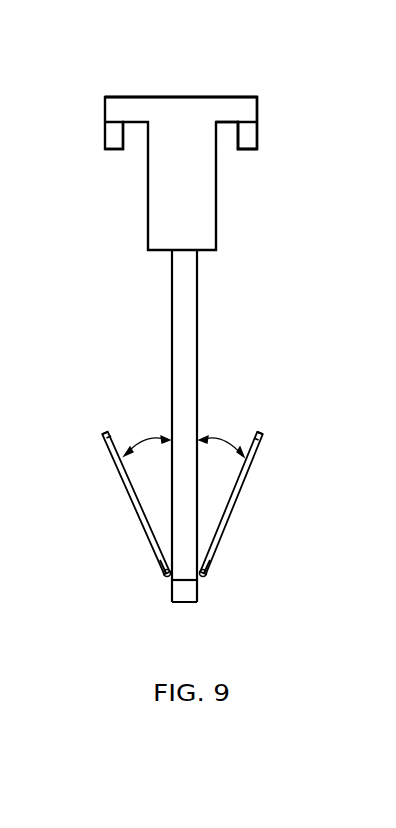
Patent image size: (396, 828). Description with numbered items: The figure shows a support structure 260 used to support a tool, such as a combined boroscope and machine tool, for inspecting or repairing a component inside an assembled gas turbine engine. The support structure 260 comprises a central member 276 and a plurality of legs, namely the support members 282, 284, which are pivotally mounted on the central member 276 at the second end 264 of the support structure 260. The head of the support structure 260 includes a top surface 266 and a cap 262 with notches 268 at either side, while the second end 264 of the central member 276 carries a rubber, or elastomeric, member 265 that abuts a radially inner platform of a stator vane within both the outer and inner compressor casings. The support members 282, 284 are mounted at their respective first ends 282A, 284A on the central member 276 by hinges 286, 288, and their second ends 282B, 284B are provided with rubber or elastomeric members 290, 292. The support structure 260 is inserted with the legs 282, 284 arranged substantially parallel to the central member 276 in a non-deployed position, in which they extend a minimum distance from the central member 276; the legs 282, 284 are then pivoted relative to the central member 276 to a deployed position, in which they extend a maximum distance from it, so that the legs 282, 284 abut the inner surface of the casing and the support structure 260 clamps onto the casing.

The support structure 260 is at (233, 228).
The head 262 is at (238, 96).
The second end 264 is at (210, 565).
The rubber member 265 is at (197, 590).
The top surface 266 is at (140, 96).
The notches 268 is at (252, 125).
The central member 276 is at (192, 320).
The support member 282 is at (128, 493).
The first arm lower end 282A is at (158, 557).
The first arm upper end 282B is at (113, 453).
The support member 284 is at (245, 483).
The second arm lower end 284A is at (225, 537).
The second arm upper end 284B is at (255, 450).
The first pivot pin 286 is at (165, 580).
The second pivot pin 288 is at (208, 577).
The first arm tip 290 is at (105, 437).
The second arm tip 292 is at (262, 436).